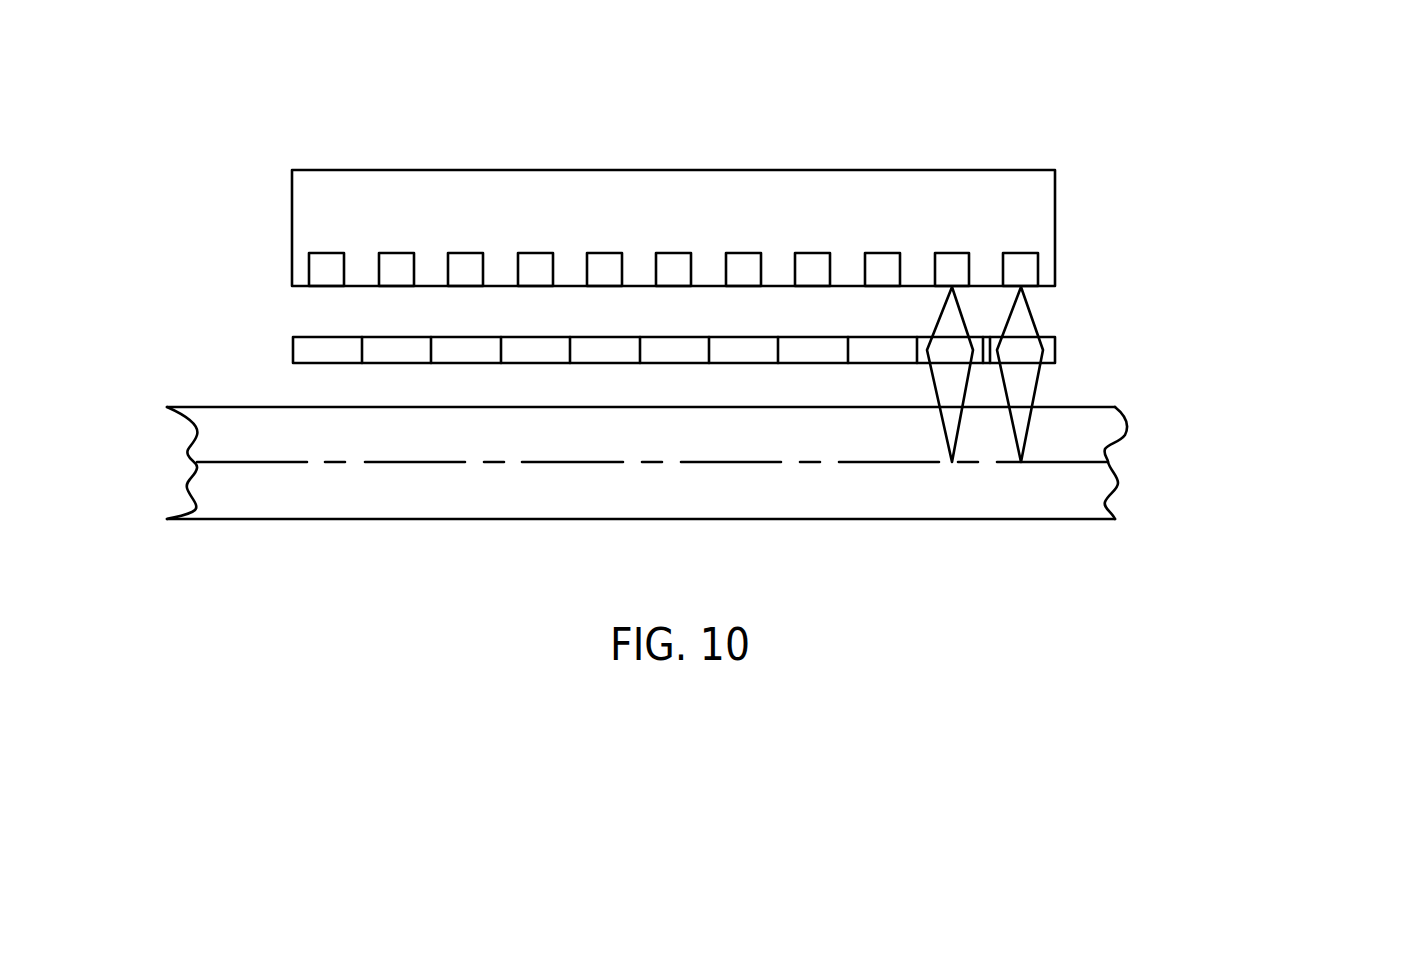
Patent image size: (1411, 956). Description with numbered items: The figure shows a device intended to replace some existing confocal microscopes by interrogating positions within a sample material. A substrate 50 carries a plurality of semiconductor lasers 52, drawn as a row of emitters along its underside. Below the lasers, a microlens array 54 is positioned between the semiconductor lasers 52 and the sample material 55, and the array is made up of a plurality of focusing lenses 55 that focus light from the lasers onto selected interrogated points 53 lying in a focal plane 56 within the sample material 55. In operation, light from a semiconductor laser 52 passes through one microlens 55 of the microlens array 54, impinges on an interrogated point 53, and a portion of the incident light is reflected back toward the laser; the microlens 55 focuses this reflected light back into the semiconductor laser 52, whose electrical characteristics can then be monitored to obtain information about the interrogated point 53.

The substrate 50 is at (1015, 210).
The semiconductor lasers 52 is at (952, 253).
The interrogated points 53 is at (1021, 462).
The microlens array 54 is at (1057, 348).
The sample material 55 is at (400, 363).
The focal plane 56 is at (1090, 452).